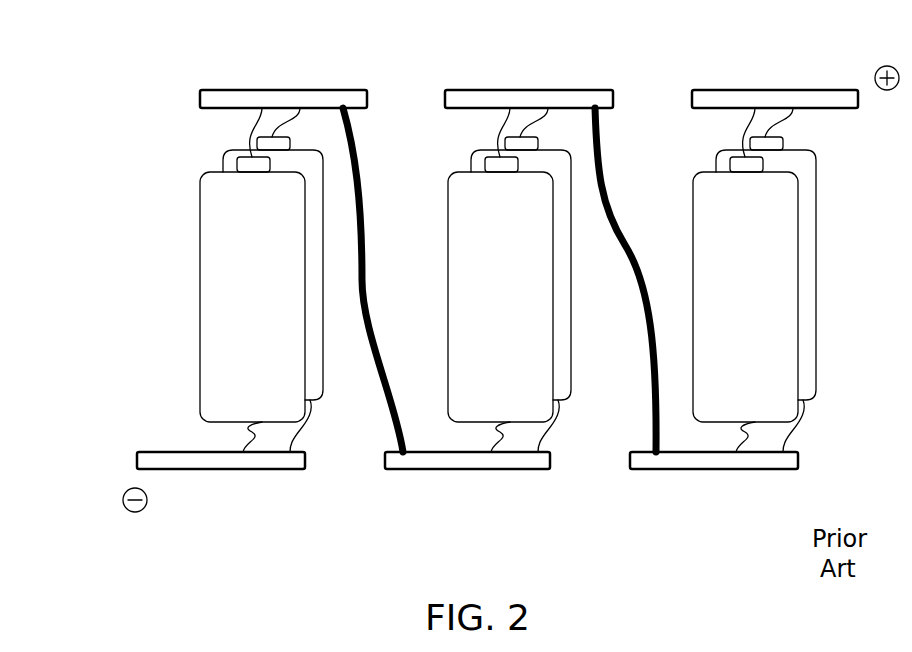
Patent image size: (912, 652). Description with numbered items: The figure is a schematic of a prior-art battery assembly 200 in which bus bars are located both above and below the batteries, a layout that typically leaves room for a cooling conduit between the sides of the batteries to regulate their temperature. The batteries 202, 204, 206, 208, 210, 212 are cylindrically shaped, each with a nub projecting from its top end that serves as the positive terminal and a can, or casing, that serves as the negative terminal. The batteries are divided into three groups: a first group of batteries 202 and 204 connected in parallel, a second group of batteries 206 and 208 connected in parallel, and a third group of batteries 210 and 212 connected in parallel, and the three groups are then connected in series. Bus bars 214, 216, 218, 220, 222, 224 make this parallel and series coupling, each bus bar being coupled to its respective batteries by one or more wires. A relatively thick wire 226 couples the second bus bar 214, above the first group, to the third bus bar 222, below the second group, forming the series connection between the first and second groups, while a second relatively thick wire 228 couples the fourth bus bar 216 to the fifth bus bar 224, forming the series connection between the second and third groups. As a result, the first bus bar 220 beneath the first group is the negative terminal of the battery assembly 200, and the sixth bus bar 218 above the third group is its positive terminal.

The battery assembly 200 is at (135, 60).
The battery 202 is at (200, 197).
The battery 204 is at (223, 162).
The battery 206 is at (448, 194).
The battery 208 is at (471, 162).
The battery 210 is at (693, 194).
The battery 212 is at (716, 162).
The second bus bar 214 is at (323, 90).
The fourth bus bar 216 is at (574, 90).
The sixth bus bar 218 is at (813, 90).
The first bus bar 220 is at (215, 469).
The third bus bar 222 is at (467, 469).
The fifth bus bar 224 is at (713, 469).
The relatively thick wire 226 is at (366, 295).
The second relatively thick wire 228 is at (675, 268).